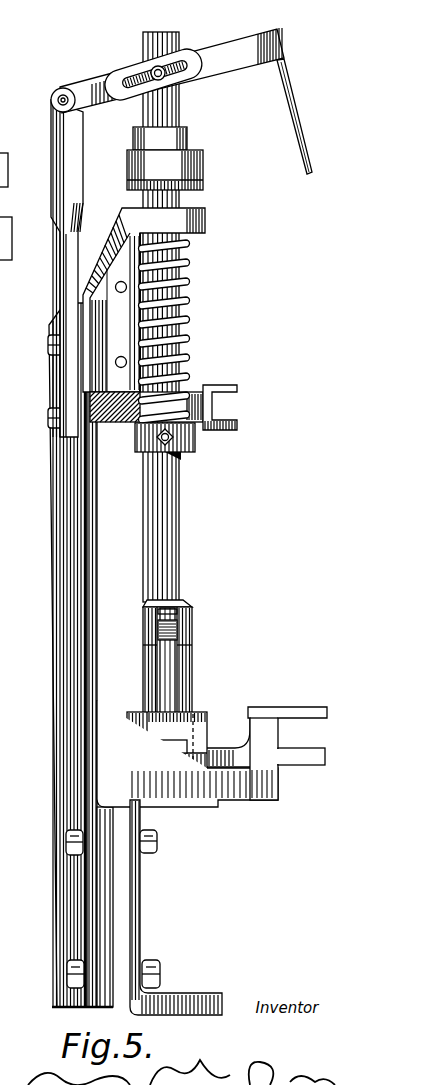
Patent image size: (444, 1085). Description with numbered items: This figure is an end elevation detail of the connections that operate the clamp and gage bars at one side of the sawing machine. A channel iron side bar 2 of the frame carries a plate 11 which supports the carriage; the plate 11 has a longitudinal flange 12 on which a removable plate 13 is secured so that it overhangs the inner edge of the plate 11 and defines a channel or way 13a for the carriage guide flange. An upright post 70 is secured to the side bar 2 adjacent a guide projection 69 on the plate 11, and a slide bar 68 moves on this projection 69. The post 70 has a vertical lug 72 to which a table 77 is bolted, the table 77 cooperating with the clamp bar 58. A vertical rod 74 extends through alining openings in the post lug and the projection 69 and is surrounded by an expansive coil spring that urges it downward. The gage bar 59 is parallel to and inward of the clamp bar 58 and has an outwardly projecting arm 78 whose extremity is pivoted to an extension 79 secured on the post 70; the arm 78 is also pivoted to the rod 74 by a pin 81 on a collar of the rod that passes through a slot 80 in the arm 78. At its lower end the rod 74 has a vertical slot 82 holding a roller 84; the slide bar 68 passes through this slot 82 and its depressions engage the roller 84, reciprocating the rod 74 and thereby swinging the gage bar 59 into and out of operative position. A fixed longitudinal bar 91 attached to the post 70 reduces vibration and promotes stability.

The channel iron side bar 2 is at (130, 903).
The plate 11 is at (267, 778).
The longitudinal flange 12 is at (257, 730).
The plate 13 is at (298, 712).
The channel or way 13a is at (307, 733).
The clamp bar 58 is at (197, 167).
The gage bar 59 is at (280, 34).
The slide bar 68 is at (163, 678).
The guide projection 69 is at (197, 718).
The upright post 70 is at (83, 543).
The vertical lug 72 is at (118, 382).
The vertical rod 74 is at (186, 556).
The table 77 is at (205, 222).
The arm 78 is at (215, 52).
The extension 79 is at (73, 188).
The slot 80 is at (166, 79).
The pin 81 is at (148, 72).
The vertical slot 82 is at (177, 678).
The roller 84 is at (173, 633).
The fixed longitudinal bar 91 is at (212, 410).